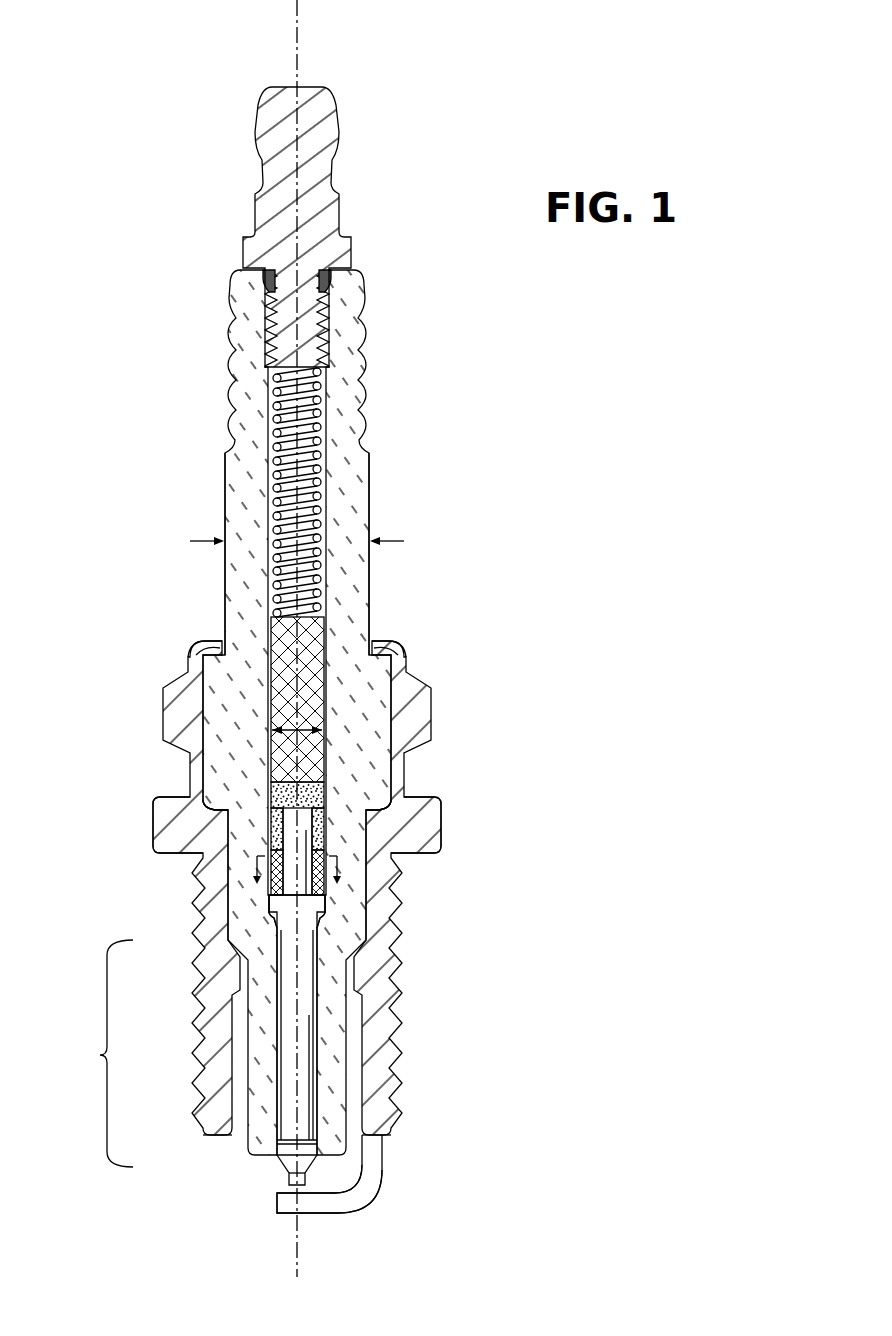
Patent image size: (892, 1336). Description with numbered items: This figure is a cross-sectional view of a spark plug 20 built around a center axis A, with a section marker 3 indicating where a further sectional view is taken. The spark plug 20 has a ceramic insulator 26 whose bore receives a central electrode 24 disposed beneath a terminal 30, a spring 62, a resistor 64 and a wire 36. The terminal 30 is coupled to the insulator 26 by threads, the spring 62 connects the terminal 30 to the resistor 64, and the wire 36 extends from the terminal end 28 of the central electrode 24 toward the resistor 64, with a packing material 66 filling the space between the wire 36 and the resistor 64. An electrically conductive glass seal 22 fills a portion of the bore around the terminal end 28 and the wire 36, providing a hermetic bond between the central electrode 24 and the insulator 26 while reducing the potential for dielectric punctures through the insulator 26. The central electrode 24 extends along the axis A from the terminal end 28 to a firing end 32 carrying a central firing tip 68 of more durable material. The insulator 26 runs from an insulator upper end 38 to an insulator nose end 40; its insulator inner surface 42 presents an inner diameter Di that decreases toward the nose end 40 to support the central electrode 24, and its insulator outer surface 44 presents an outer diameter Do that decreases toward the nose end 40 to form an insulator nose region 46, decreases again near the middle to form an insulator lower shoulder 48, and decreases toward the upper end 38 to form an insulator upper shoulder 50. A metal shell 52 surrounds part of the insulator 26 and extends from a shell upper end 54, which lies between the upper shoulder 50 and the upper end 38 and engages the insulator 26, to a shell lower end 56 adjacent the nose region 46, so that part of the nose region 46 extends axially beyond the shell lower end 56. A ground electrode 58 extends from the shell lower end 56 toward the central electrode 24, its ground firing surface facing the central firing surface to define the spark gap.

The center axis A is at (298, 40).
The spark plug 20 is at (164, 212).
The terminal 30 is at (312, 136).
The insulator upper end 38 is at (352, 272).
The insulator 26 is at (370, 311).
The spring 62 is at (330, 442).
The insulator outer surface 44 is at (225, 498).
The insulator outer diameter Do is at (202, 533).
The shell upper end 54 is at (220, 646).
The insulator upper shoulder 50 is at (205, 658).
The resistor 64 is at (305, 690).
The insulator inner diameter Di is at (268, 706).
The packing material 66 is at (323, 820).
The insulator lower shoulder 48 is at (258, 850).
The shell 52 is at (450, 827).
The wire 36 is at (258, 815).
The electrically conductive glass seal 22 is at (332, 846).
The terminal end 28 is at (327, 886).
The insulator inner surface 42 is at (268, 886).
The insulator nose region 46 is at (99, 1053).
The central electrode 24 is at (266, 1043).
The shell lower end 56 is at (388, 1134).
The firing end 32 is at (287, 1176).
The insulator nose end 40 is at (340, 1152).
The central firing tip 68 is at (290, 1188).
The ground electrode 58 is at (362, 1205).
The section line 3- 3 is at (297, 870).